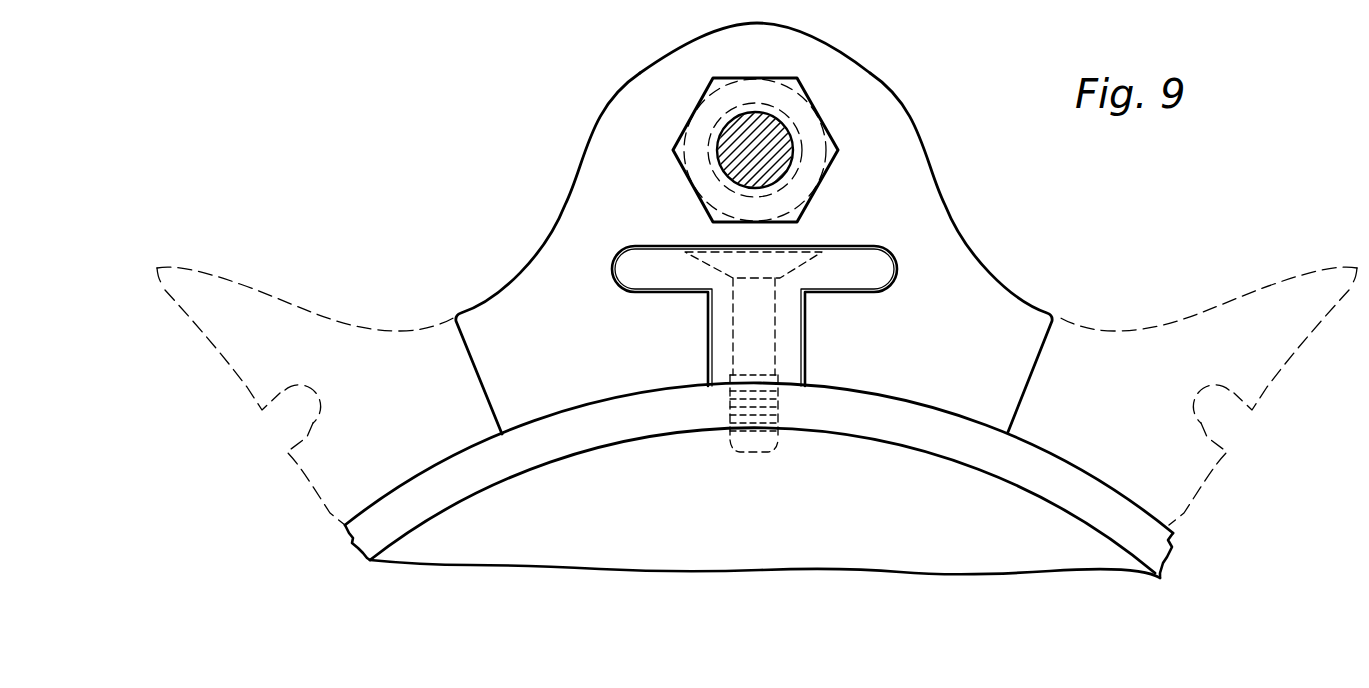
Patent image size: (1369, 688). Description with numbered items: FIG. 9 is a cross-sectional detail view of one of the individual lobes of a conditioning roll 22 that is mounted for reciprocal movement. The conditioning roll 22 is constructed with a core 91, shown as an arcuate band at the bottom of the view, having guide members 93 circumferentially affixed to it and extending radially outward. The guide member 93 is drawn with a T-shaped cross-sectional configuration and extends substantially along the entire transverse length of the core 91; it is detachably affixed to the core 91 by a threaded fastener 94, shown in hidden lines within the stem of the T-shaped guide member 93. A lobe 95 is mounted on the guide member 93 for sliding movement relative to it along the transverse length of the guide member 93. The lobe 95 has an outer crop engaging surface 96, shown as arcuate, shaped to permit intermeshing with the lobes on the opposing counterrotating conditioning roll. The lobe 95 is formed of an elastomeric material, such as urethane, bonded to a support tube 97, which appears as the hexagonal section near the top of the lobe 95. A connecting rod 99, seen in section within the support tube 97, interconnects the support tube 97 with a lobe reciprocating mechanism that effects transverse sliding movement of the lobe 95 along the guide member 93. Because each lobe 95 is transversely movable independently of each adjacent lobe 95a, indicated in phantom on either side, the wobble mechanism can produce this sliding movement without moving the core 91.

The conditioning roll 22 is at (780, 584).
The core 91 is at (885, 442).
The guide member 93 is at (858, 292).
The threaded fastener 94 is at (757, 454).
The lobe 95 is at (577, 178).
The adjacent lobe 95a is at (277, 296).
The outer crop engaging surface 96 is at (637, 72).
The support tube 97 is at (840, 148).
The connecting rod 99 is at (722, 158).